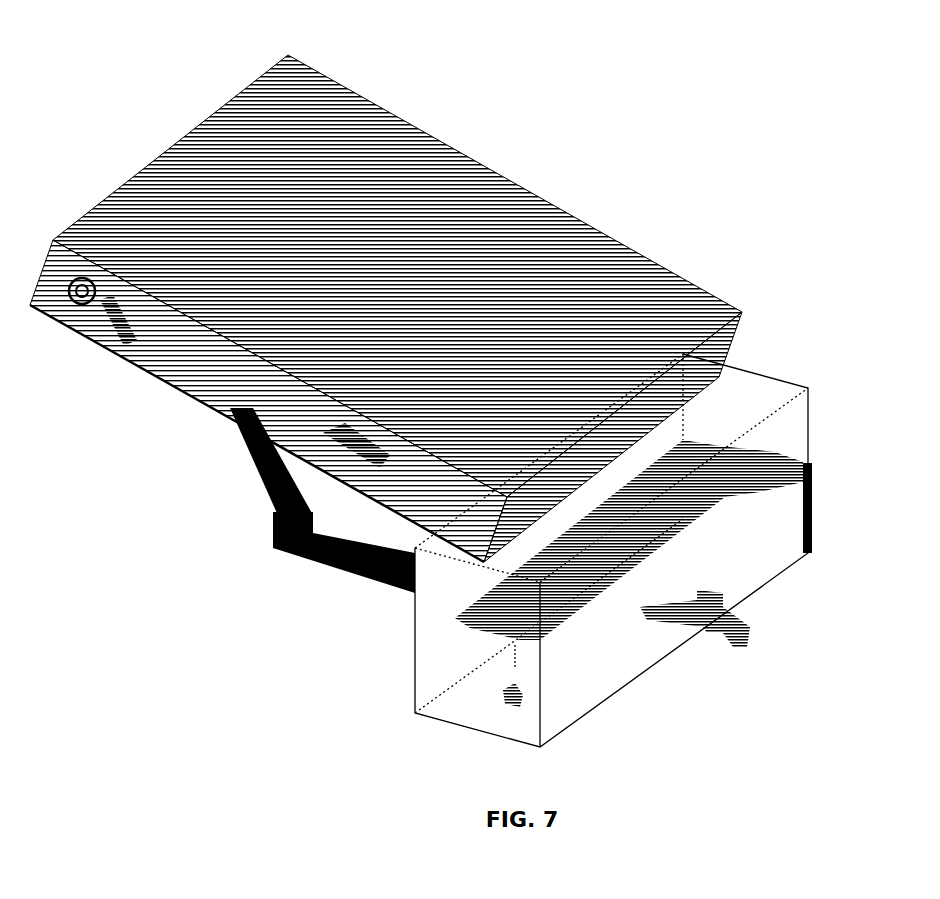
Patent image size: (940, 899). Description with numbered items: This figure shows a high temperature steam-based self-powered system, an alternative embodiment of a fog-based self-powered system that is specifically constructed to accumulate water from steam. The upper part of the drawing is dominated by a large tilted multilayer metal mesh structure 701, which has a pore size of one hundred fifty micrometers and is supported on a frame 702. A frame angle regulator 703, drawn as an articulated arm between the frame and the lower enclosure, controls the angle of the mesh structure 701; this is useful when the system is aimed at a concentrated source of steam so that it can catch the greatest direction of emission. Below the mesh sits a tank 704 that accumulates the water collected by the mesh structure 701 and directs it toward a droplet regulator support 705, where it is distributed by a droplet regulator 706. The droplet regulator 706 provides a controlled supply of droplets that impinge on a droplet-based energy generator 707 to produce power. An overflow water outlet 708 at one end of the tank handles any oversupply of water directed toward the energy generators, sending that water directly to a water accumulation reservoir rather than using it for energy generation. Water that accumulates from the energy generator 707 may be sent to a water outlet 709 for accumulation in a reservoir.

The multilayer metal mesh structure 701 is at (413, 201).
The frame 702 is at (207, 338).
The frame angle regulator 703 is at (304, 535).
The tank 704 is at (727, 402).
The droplet regulator support 705 is at (662, 465).
The droplet regulator 706 is at (505, 643).
The droplet-based energy generator 707 is at (497, 687).
The overflow water outlet 708 is at (807, 533).
The water outlet 709 is at (710, 606).